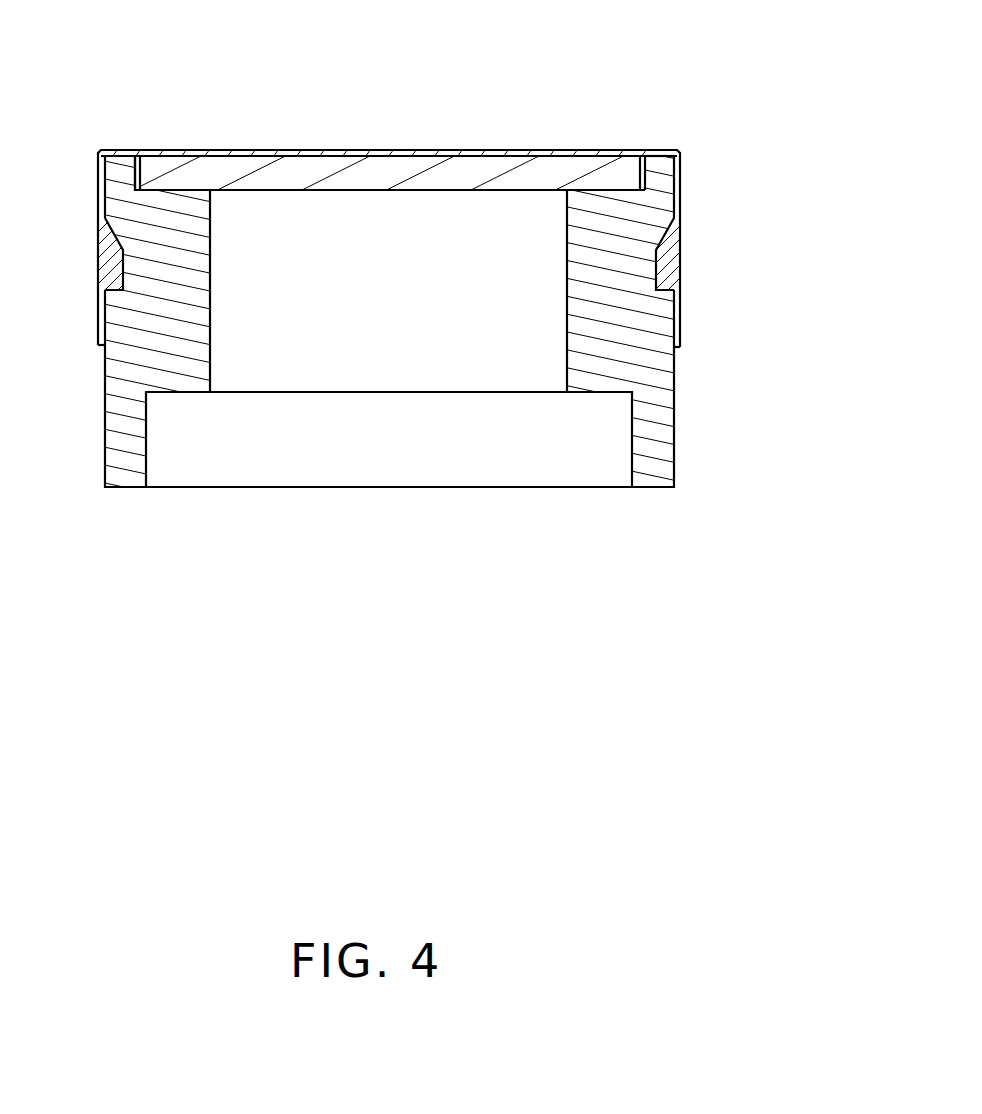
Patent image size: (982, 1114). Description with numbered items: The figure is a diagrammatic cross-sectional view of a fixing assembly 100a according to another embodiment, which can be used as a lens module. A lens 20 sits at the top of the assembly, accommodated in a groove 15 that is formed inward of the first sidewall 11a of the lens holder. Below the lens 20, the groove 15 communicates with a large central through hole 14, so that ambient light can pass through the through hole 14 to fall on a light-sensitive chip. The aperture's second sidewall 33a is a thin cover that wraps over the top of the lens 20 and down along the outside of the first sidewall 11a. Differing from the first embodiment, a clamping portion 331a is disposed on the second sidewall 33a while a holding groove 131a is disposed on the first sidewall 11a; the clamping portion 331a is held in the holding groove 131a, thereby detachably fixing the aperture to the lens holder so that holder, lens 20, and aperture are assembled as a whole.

The fixing assembly 100a is at (462, 36).
The first sidewall 11a is at (665, 410).
The through hole 14 is at (392, 227).
The groove 15 is at (128, 146).
The lens 20 is at (300, 170).
The second sidewall 33a is at (678, 192).
The holding groove 131a is at (662, 261).
The clamping portion 331a is at (668, 274).